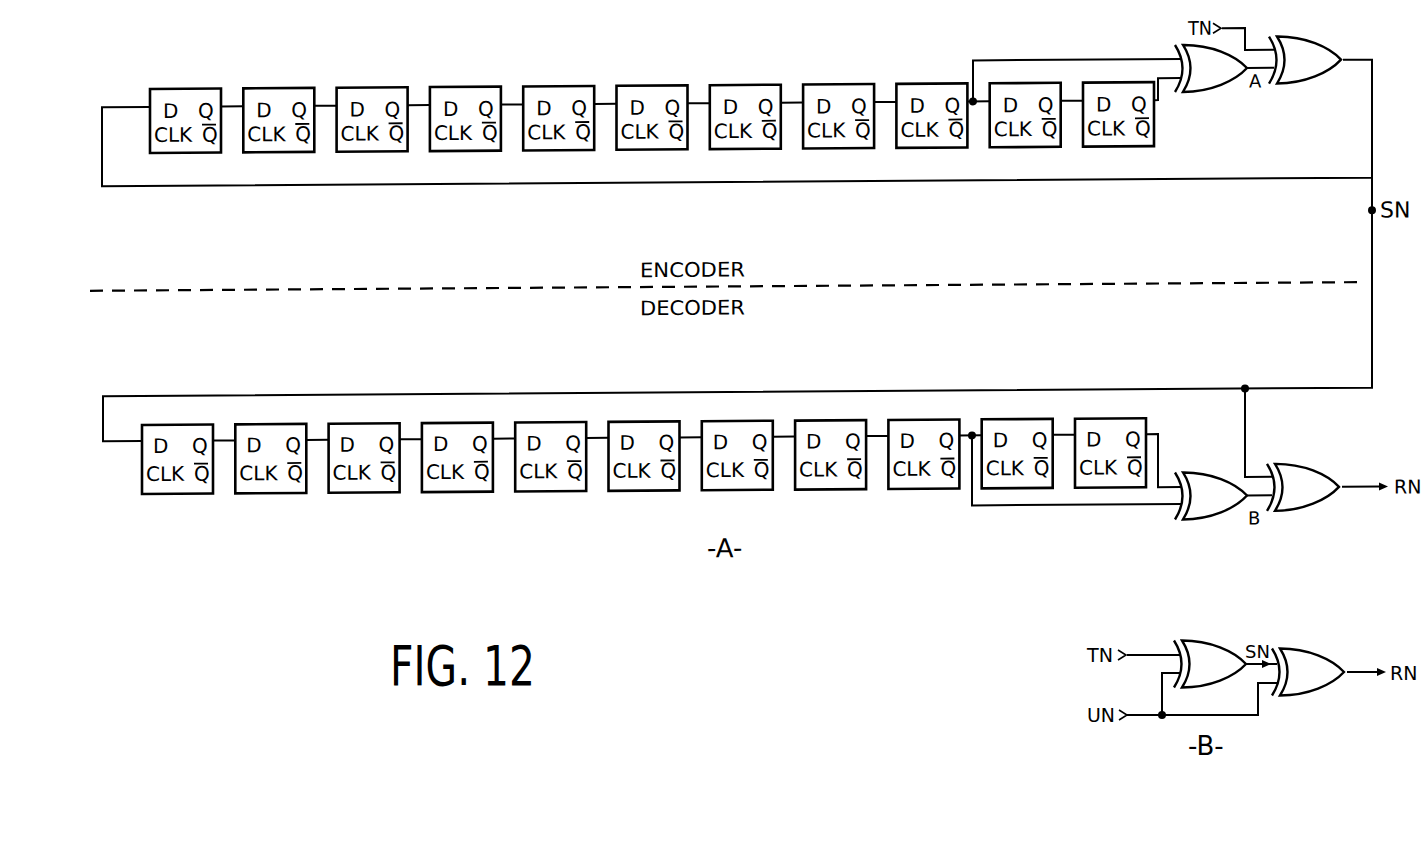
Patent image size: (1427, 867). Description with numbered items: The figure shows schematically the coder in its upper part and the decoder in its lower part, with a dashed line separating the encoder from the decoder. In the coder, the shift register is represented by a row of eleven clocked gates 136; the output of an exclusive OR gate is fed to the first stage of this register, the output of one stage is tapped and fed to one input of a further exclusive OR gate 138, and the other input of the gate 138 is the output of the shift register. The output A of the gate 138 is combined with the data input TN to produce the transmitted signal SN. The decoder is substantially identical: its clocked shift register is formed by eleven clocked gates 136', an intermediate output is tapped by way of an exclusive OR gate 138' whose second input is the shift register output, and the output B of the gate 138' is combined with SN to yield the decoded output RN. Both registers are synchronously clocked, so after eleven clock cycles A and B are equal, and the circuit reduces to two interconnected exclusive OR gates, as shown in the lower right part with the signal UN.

The further exclusive OR gate 138 is at (1210, 102).
The clocked gates 136 is at (593, 155).
The clocked gates 136' is at (773, 419).
The exclusive OR gate 138' is at (1179, 516).